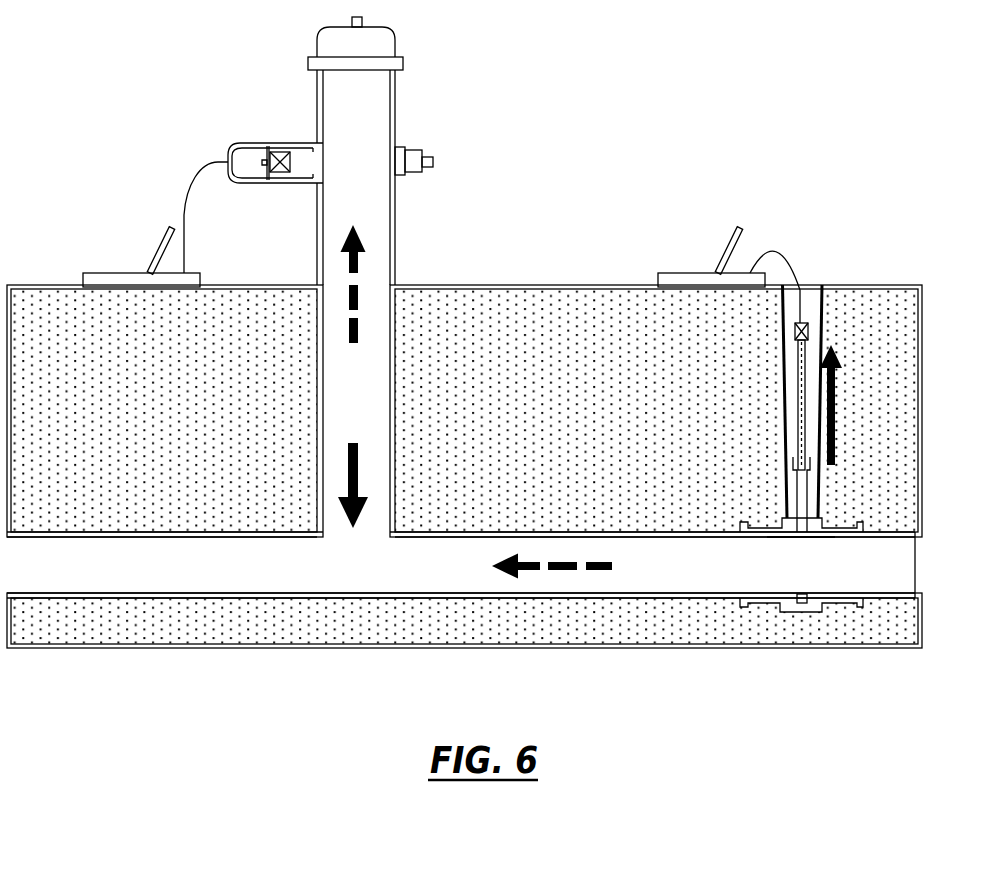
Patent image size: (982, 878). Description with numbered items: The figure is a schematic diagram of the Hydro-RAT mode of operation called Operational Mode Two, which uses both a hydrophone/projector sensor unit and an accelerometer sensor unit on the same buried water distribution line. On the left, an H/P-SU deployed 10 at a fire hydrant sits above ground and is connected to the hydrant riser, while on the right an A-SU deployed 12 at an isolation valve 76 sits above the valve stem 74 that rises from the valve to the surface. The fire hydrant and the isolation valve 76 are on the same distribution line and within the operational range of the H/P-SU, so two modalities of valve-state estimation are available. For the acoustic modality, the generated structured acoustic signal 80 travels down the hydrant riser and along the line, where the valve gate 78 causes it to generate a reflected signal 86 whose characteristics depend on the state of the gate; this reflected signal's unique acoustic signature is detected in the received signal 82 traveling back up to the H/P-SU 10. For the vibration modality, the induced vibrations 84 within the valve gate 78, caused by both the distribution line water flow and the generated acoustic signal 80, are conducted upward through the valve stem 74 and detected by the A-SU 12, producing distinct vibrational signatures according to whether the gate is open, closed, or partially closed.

The H/P-SU deployed at a fire hydrant 10 is at (150, 120).
The A-SU deployed at an isolation valve 12 is at (700, 225).
The valve stem 74 is at (793, 380).
The isolation valve 76 is at (752, 518).
The valve gate 78 is at (797, 502).
The generated structured acoustic signal 80 is at (364, 437).
The received signal 82 is at (364, 377).
The induced vibrations 84 is at (862, 437).
The reflected signal 86 is at (647, 577).